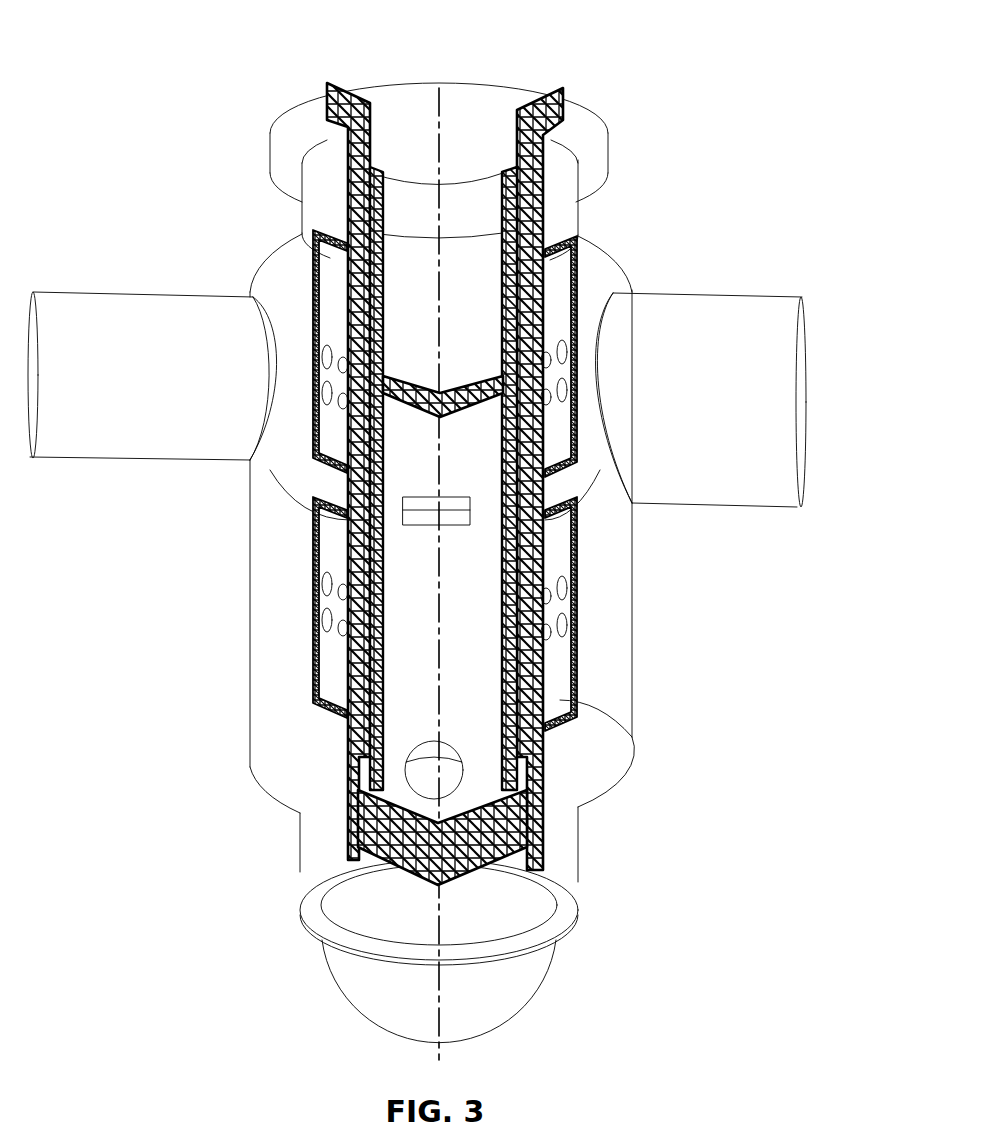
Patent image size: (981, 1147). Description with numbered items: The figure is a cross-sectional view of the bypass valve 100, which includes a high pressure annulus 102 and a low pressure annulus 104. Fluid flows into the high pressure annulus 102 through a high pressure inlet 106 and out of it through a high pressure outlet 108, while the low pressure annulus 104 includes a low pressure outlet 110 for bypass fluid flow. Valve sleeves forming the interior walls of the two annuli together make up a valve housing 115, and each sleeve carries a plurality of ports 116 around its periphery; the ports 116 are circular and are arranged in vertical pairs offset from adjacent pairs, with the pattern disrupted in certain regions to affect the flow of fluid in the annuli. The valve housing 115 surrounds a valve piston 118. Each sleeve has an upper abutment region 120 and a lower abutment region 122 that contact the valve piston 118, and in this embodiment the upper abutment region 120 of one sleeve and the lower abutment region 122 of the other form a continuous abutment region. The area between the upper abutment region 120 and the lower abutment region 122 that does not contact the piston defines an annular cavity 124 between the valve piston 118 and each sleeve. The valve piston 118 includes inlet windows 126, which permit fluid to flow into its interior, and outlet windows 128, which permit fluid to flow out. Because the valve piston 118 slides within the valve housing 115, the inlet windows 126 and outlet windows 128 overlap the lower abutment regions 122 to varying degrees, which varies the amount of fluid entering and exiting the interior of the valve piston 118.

The bypass valve 100 is at (168, 52).
The high pressure annulus 102 is at (280, 248).
The low pressure annulus 104 is at (598, 772).
The high pressure inlet 106 is at (722, 300).
The high pressure outlet 108 is at (112, 300).
The low pressure outlet 110 is at (360, 988).
The valve housing 115 is at (560, 195).
The ports 116 is at (342, 357).
The valve piston 118 is at (407, 863).
The upper abutment region 120 is at (387, 280).
The lower abutment region 122 is at (378, 476).
The annular cavity 124 is at (380, 370).
The inlet windows 126 is at (432, 497).
The outlet windows 128 is at (447, 748).